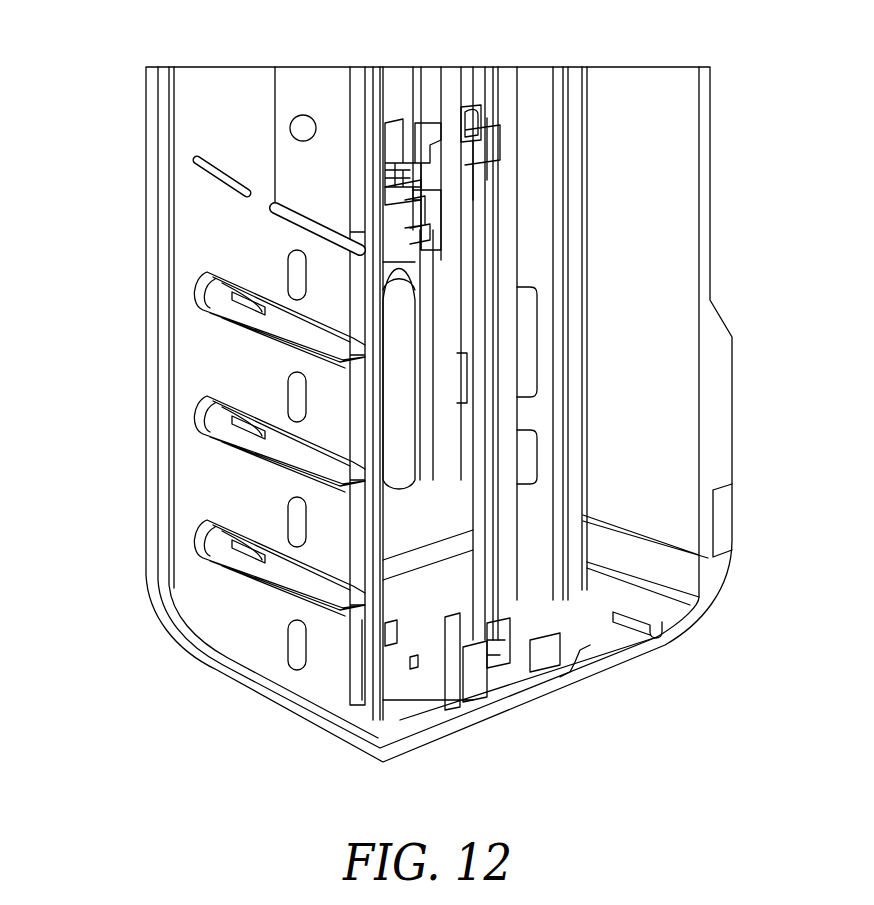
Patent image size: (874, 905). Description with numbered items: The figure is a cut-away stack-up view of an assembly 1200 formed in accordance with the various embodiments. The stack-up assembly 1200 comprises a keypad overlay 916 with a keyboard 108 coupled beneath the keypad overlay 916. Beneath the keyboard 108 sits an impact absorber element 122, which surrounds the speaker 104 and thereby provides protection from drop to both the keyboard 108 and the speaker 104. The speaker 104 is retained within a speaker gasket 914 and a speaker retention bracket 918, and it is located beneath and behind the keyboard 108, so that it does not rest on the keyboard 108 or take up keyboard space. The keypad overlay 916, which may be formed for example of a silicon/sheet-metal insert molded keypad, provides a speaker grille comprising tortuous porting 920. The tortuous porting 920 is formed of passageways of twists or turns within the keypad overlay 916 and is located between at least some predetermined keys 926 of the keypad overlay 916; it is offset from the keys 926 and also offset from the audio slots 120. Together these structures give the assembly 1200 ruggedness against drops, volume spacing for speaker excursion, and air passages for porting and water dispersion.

The speaker 104 is at (457, 443).
The keyboard 108 is at (493, 653).
The audio slots 120 is at (277, 328).
The impact absorber element 122 is at (390, 140).
The speaker gasket 914 is at (380, 185).
The keypad overlay 916 is at (237, 618).
The speaker retention bracket 918 is at (385, 197).
The tortuous porting 920 is at (200, 288).
The keys 926 is at (287, 648).
The stack-up assembly 1200 is at (868, 736).